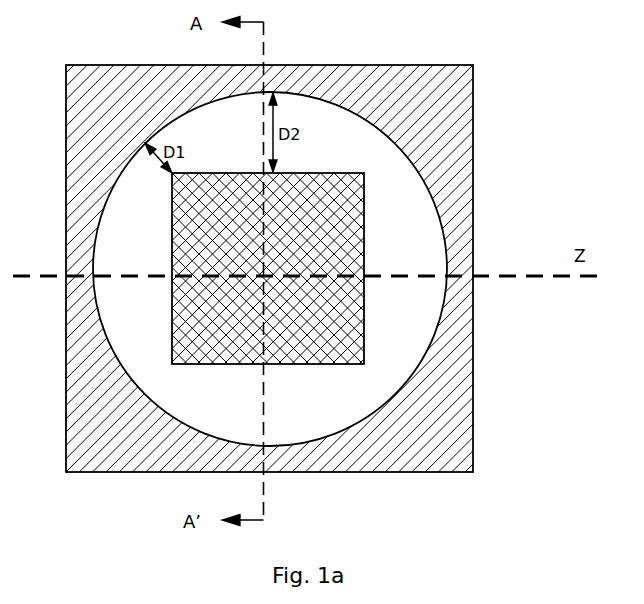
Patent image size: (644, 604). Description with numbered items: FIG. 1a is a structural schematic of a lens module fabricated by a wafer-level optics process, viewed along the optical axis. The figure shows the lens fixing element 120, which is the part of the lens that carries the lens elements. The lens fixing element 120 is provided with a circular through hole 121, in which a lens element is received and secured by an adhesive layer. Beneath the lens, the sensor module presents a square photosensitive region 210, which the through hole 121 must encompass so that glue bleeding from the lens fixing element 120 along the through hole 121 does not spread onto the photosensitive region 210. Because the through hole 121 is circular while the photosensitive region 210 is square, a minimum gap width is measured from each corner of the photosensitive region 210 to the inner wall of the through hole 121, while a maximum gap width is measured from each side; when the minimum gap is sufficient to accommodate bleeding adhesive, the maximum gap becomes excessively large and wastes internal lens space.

The lens fixing element 120 is at (388, 105).
The through hole 121 is at (424, 155).
The photosensitive region 210 is at (309, 197).